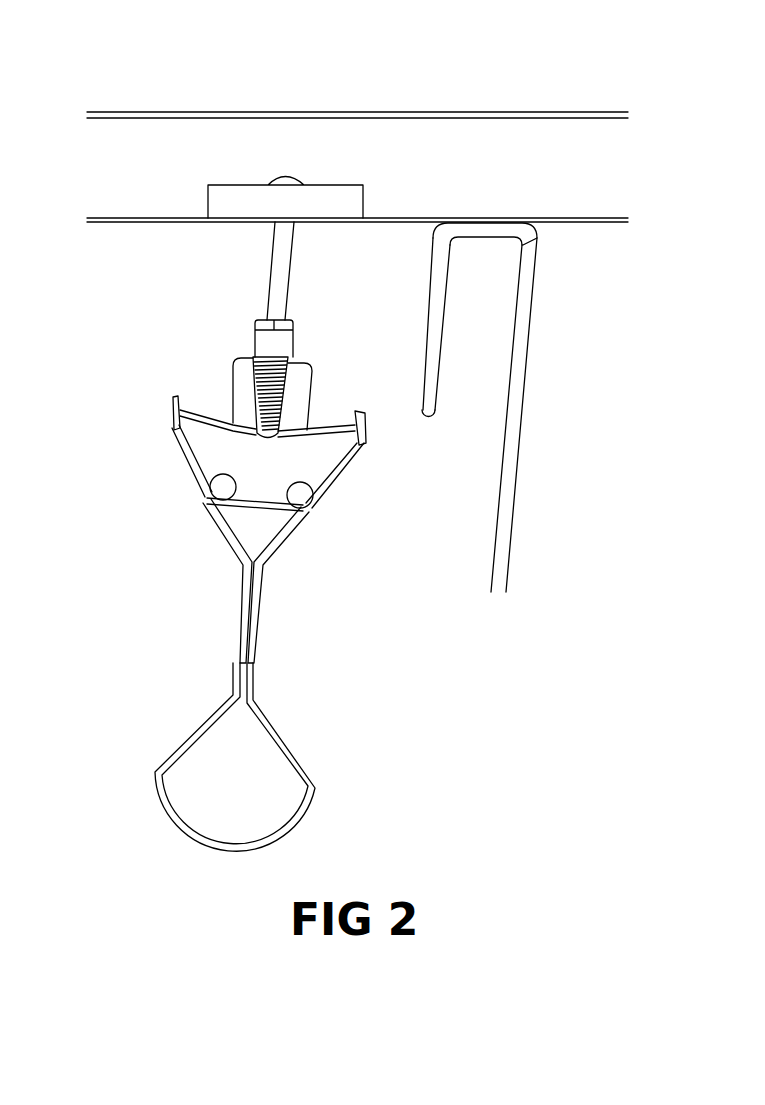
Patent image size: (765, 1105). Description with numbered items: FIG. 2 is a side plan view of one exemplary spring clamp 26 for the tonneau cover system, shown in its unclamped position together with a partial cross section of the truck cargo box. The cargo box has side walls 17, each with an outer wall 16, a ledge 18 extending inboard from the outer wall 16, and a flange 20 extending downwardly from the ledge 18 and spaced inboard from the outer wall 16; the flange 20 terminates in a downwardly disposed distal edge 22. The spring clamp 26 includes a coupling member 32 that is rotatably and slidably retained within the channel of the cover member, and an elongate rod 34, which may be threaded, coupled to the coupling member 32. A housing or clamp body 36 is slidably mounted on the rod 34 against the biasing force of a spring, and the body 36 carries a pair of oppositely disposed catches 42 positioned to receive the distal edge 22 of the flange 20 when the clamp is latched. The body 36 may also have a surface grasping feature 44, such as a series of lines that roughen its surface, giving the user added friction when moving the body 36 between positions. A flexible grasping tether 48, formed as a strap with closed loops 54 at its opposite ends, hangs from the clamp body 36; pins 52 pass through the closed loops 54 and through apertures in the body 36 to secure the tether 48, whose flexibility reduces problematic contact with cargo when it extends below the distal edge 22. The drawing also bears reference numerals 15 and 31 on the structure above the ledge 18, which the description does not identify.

The ceiling structure 15 is at (357, 130).
The ceiling deck 31 is at (301, 112).
The coupling member 32 is at (359, 200).
The rod 34 is at (268, 237).
The surface grasping feature 44 is at (280, 371).
The side wall 17 is at (534, 388).
The ledge 18 is at (503, 243).
The flange 20 is at (437, 323).
The distal edge 22 is at (428, 422).
The outer wall 16 is at (505, 487).
The spring clamp 26 is at (222, 536).
The clamp body 36 is at (276, 440).
The catch 42 is at (203, 410).
The pins 52 is at (222, 488).
The closed loops 54 is at (218, 511).
The grasping tether 48 is at (128, 781).